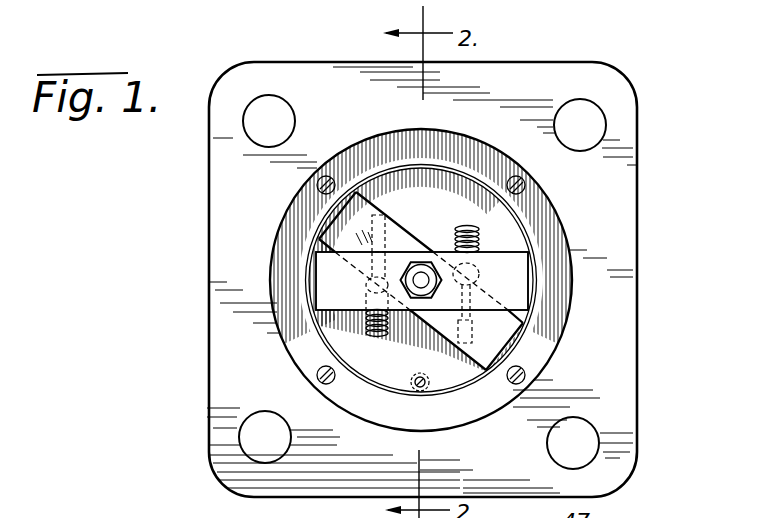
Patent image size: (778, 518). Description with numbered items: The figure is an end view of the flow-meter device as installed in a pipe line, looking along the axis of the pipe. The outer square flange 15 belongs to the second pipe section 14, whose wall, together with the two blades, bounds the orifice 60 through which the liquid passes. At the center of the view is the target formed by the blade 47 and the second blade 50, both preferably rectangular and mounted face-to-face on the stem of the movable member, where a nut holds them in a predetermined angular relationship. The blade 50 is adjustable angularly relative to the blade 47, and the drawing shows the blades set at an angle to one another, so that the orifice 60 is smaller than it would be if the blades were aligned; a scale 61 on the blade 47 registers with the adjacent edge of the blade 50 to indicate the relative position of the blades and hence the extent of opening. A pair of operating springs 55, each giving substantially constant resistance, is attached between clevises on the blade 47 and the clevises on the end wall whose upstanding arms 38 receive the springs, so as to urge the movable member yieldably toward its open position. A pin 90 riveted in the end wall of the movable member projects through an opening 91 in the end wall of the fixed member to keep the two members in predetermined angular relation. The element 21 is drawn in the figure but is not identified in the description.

The mounting plate 15 is at (613, 388).
The dial ring 60 is at (390, 374).
The dial face bezel 55 is at (498, 241).
The clamp bar 50 is at (333, 300).
The rotatable plate 47 is at (396, 240).
The clamp screw 61 is at (364, 241).
The adjusting screw 38 is at (473, 334).
The screw hole 90 is at (426, 381).
The locking screw 91 is at (420, 389).
The housing 21 is at (221, 511).
The base 14 is at (280, 511).